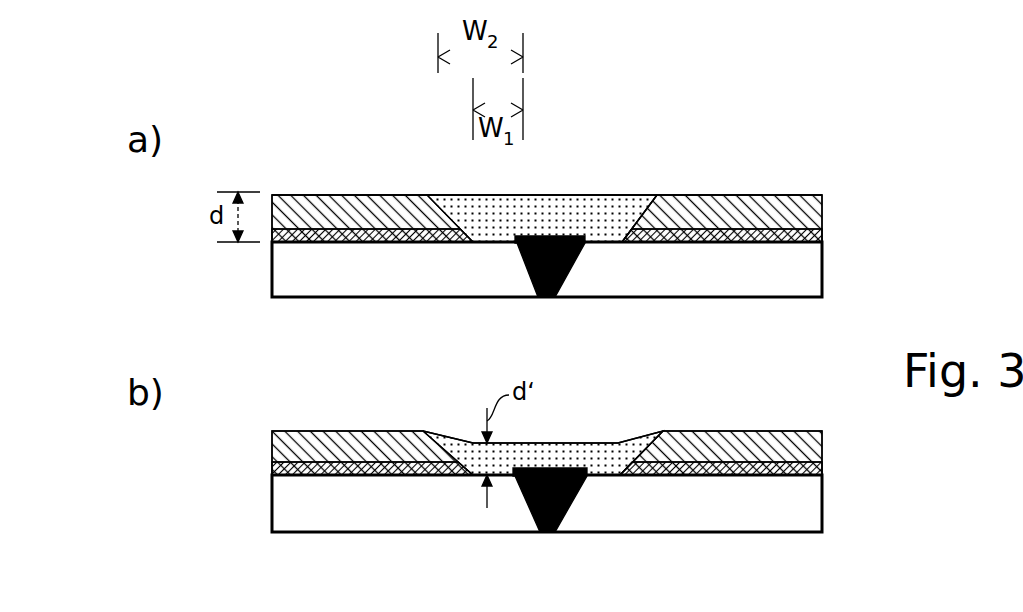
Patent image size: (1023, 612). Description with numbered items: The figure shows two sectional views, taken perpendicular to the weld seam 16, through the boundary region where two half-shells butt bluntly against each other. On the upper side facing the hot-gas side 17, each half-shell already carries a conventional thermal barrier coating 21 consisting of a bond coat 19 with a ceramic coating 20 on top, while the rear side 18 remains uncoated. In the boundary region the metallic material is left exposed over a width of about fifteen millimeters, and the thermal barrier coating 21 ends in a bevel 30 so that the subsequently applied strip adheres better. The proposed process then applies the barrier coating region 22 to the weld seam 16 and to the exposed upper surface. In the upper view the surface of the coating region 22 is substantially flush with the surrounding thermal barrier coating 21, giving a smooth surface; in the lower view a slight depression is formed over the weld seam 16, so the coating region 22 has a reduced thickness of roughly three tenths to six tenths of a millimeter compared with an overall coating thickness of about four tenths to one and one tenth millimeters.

The weld seam 16 is at (531, 275).
The hot-gas side 17 is at (360, 166).
The rear side 18 is at (440, 338).
The bond coat 19 is at (820, 233).
The ceramic coating 20 is at (820, 213).
The thermal barrier coating 21 is at (615, 321).
The coating region 22 is at (575, 222).
The bevel 30 is at (650, 205).